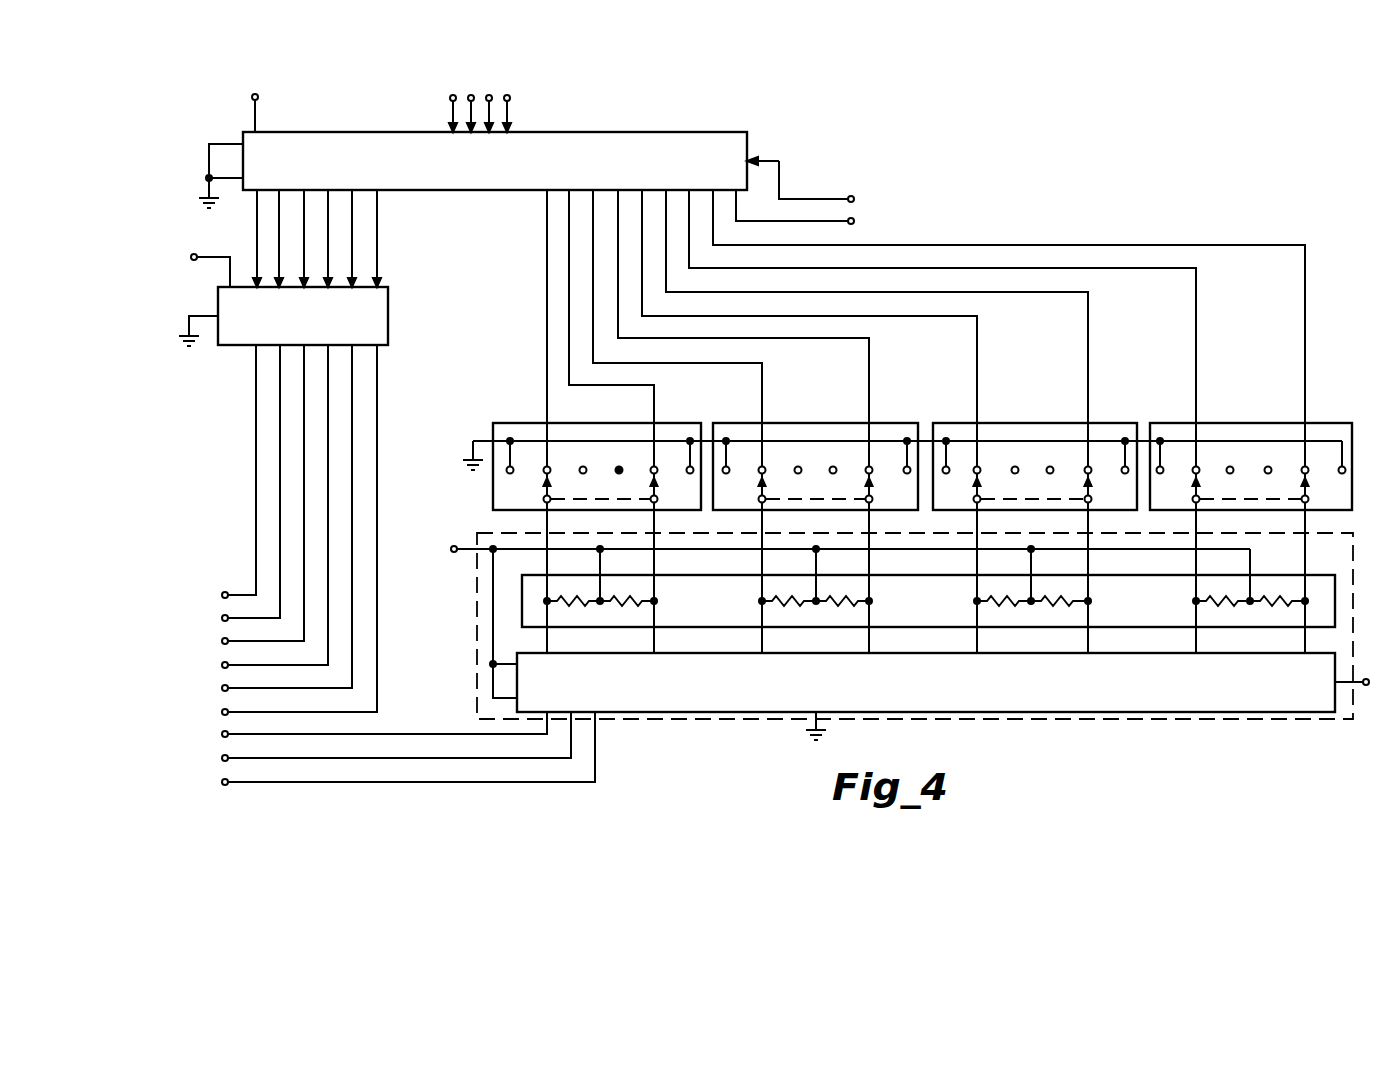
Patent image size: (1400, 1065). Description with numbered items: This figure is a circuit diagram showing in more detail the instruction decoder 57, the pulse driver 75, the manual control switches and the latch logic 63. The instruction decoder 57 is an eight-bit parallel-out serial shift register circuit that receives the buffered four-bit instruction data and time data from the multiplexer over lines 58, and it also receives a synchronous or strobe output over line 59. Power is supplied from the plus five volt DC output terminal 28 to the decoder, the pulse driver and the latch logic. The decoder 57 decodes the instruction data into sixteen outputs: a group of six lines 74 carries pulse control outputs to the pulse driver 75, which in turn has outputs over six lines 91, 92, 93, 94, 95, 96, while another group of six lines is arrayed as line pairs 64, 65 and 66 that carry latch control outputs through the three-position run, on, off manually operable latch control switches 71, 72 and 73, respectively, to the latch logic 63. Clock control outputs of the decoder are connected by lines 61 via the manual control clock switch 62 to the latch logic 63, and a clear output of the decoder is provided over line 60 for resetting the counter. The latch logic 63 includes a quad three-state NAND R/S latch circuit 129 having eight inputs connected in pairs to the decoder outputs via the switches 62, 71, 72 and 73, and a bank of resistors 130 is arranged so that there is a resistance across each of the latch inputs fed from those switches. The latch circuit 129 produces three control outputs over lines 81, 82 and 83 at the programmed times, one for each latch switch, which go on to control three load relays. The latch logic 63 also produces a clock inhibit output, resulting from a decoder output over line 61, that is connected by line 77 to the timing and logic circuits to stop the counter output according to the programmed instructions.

The DC output terminal 28 is at (258, 94).
The instruction decoder 57 is at (697, 131).
The lines 58 is at (445, 93).
The line 59 is at (808, 197).
The line 60 is at (848, 224).
The lines 61 is at (567, 350).
The clock control switch 62 is at (528, 421).
The latch logic 63 is at (1228, 720).
The lines 64 is at (592, 353).
The lines 65 is at (714, 315).
The lines 66 is at (968, 267).
The latch control switch 71 is at (885, 421).
The latch control switch 72 is at (1119, 421).
The latch control switch 73 is at (1325, 421).
The line 74 is at (386, 259).
The pulse driver 75 is at (398, 325).
The line 77 is at (1366, 686).
The line 81 is at (222, 782).
The line 82 is at (222, 758).
The line 83 is at (222, 734).
The line 91 is at (222, 712).
The line 92 is at (222, 688).
The line 93 is at (222, 665).
The line 94 is at (222, 641).
The line 95 is at (222, 618).
The line 96 is at (222, 595).
The latch circuit 129 is at (1030, 713).
The bank of resistors 130 is at (1312, 573).